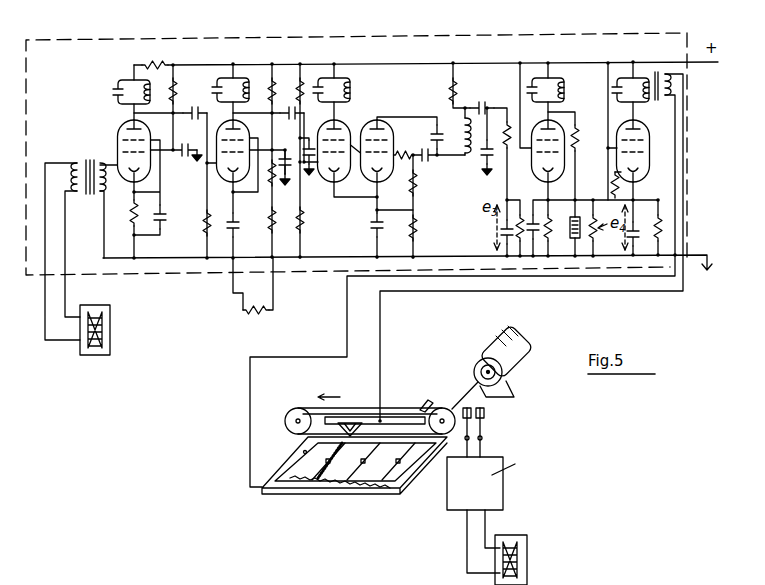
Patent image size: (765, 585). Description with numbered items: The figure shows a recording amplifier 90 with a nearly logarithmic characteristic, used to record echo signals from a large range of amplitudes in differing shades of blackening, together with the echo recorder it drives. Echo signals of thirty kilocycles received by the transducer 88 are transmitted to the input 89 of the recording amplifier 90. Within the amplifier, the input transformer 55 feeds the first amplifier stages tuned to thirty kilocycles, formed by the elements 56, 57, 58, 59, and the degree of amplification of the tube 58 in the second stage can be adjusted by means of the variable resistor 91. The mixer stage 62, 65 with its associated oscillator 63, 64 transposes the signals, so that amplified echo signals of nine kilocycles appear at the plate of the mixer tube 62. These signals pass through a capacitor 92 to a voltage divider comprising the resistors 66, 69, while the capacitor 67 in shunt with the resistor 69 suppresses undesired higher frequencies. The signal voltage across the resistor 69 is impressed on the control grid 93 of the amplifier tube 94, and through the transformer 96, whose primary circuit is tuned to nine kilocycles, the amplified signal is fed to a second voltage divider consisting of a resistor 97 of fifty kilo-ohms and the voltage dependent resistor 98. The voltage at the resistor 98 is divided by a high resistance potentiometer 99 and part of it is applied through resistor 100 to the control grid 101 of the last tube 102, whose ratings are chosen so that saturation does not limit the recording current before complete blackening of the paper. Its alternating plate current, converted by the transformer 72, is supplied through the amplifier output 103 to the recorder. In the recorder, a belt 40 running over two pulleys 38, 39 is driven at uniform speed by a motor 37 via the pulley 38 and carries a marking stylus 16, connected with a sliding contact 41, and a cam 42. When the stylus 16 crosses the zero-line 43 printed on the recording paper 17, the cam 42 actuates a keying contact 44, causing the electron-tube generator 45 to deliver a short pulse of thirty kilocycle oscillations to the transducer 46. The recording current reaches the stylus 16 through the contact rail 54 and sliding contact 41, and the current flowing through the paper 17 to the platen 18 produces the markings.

The recording amplifier 90 is at (500, 44).
The transformer 72 is at (650, 70).
The tuned circuit element of first amplifier stage 57 is at (116, 87).
The tuned circuit element of second amplifier stage 59 is at (218, 88).
The mixer stage tuned element 65 is at (349, 82).
The input transformer 55 is at (87, 162).
The first stage amplifier tube 56 is at (118, 153).
The second stage amplifier tube 58 is at (221, 172).
The mixer tube 62 is at (330, 178).
The oscillator tube 63 is at (386, 180).
The oscillator coil 64 is at (468, 153).
The voltage divider resistor 66 is at (505, 140).
The coupling capacitor 92 is at (478, 108).
The shunt capacitor 67 is at (500, 233).
The control grid 93 is at (532, 163).
The amplifier tube 94 is at (563, 120).
The transformer 96 is at (563, 84).
The resistor 97 is at (579, 143).
The voltage dependent resistor 98 is at (572, 220).
The high resistance potentiometer 99 is at (591, 242).
The resistor 100 is at (611, 188).
The control grid 101 is at (645, 176).
The last tube 102 is at (641, 121).
The amplifier output 103 is at (684, 283).
The voltage divider resistor 69 is at (519, 256).
The amplifier input 89 is at (66, 284).
The transducer 88 is at (112, 347).
The variable resistor 91 is at (250, 318).
The motor 37 is at (492, 350).
The pulley 38 is at (452, 408).
The pulley 39 is at (297, 408).
The sliding contact 41 is at (352, 415).
The belt 40 is at (378, 413).
The contact rail 54 is at (395, 416).
The cam 42 is at (429, 400).
The zero-line 43 is at (297, 468).
The marking stylus 16 is at (350, 438).
The recording paper 17 is at (410, 466).
The platen 18 is at (305, 491).
The keying contact 44 is at (482, 426).
The electron-tube generator 45 is at (498, 487).
The transducer 46 is at (528, 569).